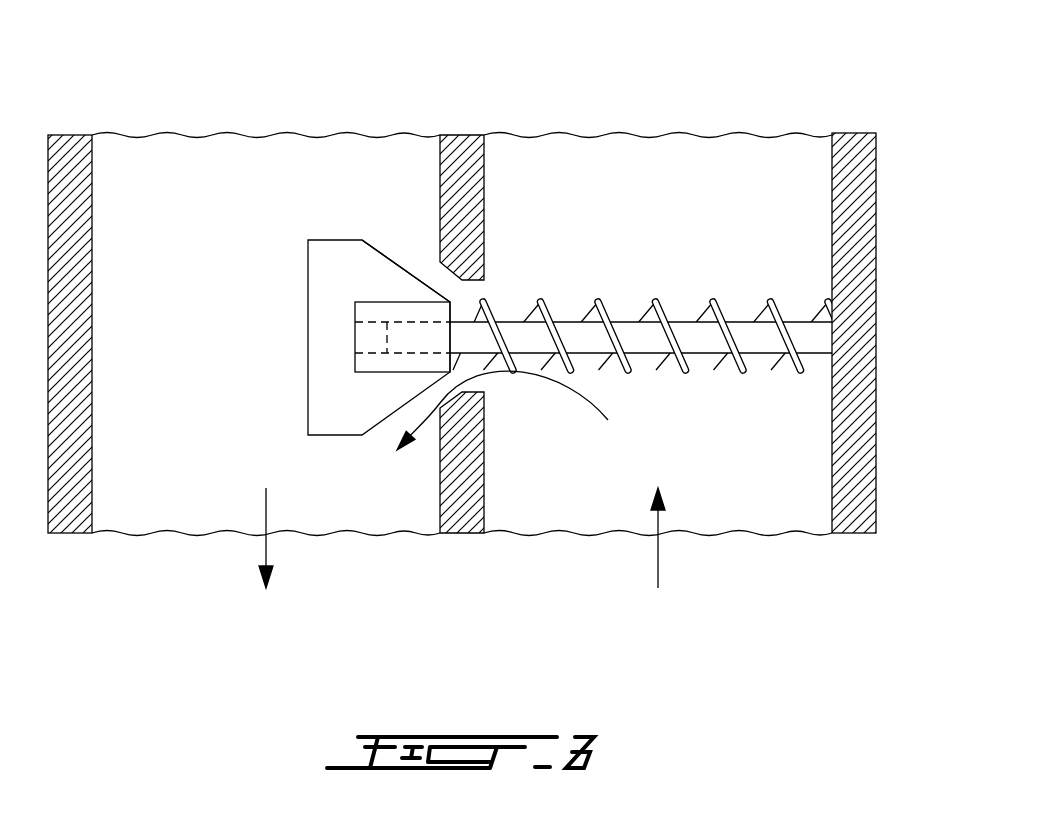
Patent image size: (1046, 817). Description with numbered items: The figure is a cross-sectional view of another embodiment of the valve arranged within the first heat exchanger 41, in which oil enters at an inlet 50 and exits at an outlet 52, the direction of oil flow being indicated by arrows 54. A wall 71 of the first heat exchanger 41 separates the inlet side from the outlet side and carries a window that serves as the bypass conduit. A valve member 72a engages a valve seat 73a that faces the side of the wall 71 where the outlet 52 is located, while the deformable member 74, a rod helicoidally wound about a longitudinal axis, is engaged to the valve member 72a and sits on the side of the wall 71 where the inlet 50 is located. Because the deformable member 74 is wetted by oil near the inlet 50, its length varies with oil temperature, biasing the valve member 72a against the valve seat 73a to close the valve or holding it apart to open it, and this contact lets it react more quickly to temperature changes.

The first heat exchanger 41 is at (782, 122).
The wall 71 is at (484, 200).
The valve member 72a is at (307, 303).
The valve seat 73a is at (445, 280).
The deformable member 74 is at (713, 302).
The arrows 54 is at (561, 383).
The outlet 52 is at (317, 508).
The inlet 50 is at (722, 503).